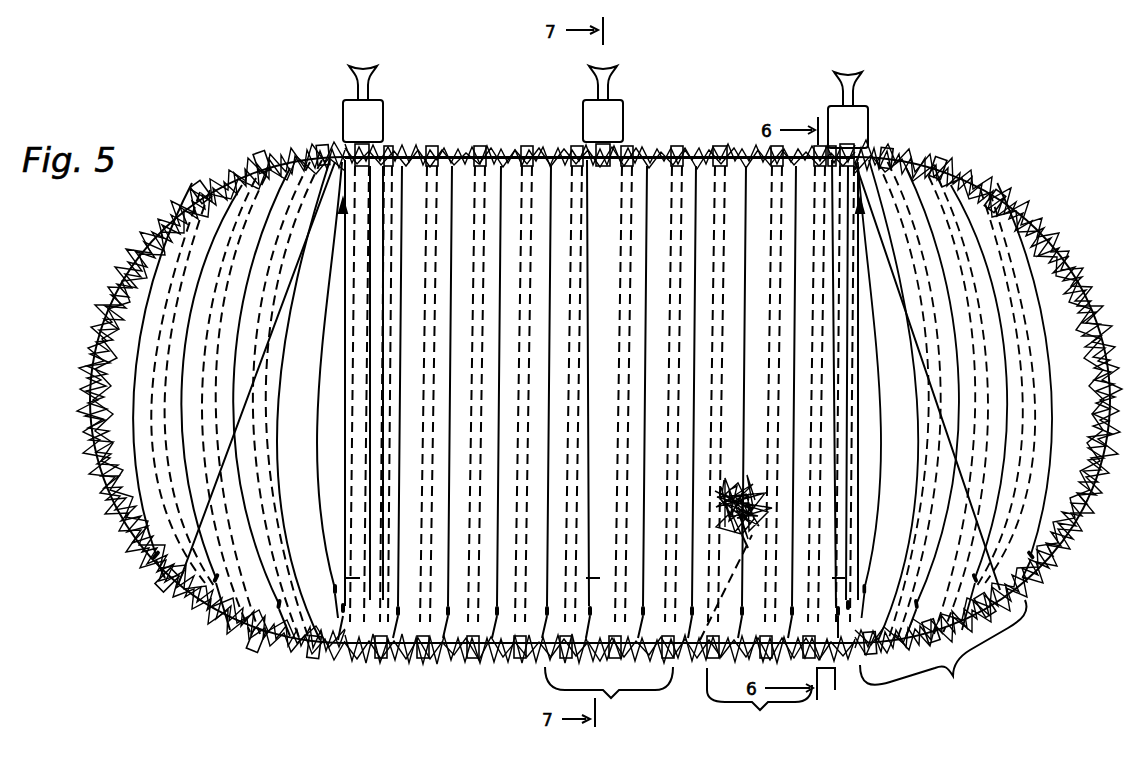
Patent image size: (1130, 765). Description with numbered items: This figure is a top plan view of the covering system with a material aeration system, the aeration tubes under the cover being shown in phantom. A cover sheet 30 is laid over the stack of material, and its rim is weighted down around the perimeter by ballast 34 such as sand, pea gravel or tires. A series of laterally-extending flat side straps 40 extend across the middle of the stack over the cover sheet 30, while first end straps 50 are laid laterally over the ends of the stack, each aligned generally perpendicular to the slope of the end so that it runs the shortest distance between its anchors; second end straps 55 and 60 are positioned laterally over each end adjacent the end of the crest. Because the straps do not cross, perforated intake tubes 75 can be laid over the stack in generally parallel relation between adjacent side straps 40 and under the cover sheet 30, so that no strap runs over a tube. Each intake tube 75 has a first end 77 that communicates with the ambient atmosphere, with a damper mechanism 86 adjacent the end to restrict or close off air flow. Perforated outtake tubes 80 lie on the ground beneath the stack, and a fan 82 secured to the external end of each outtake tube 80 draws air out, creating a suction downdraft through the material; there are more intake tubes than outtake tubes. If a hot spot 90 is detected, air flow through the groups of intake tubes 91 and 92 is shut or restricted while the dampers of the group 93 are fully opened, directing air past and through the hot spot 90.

The cover sheet 30 is at (466, 162).
The ballast 34 is at (100, 462).
The side strap 40 is at (345, 446).
The first end strap 50 is at (110, 520).
The second end strap 55 is at (275, 398).
The second end strap 60 is at (318, 390).
The intake tube 75 is at (230, 165).
The first end 77 is at (249, 165).
The outtake tube 80 is at (292, 150).
The fan 82 is at (343, 112).
The damper mechanism 86 is at (237, 632).
The hot spot 90 is at (690, 667).
The group of intake tubes 91 is at (609, 689).
The group of intake tubes 92 is at (943, 649).
The group of intake tubes 93 is at (759, 699).